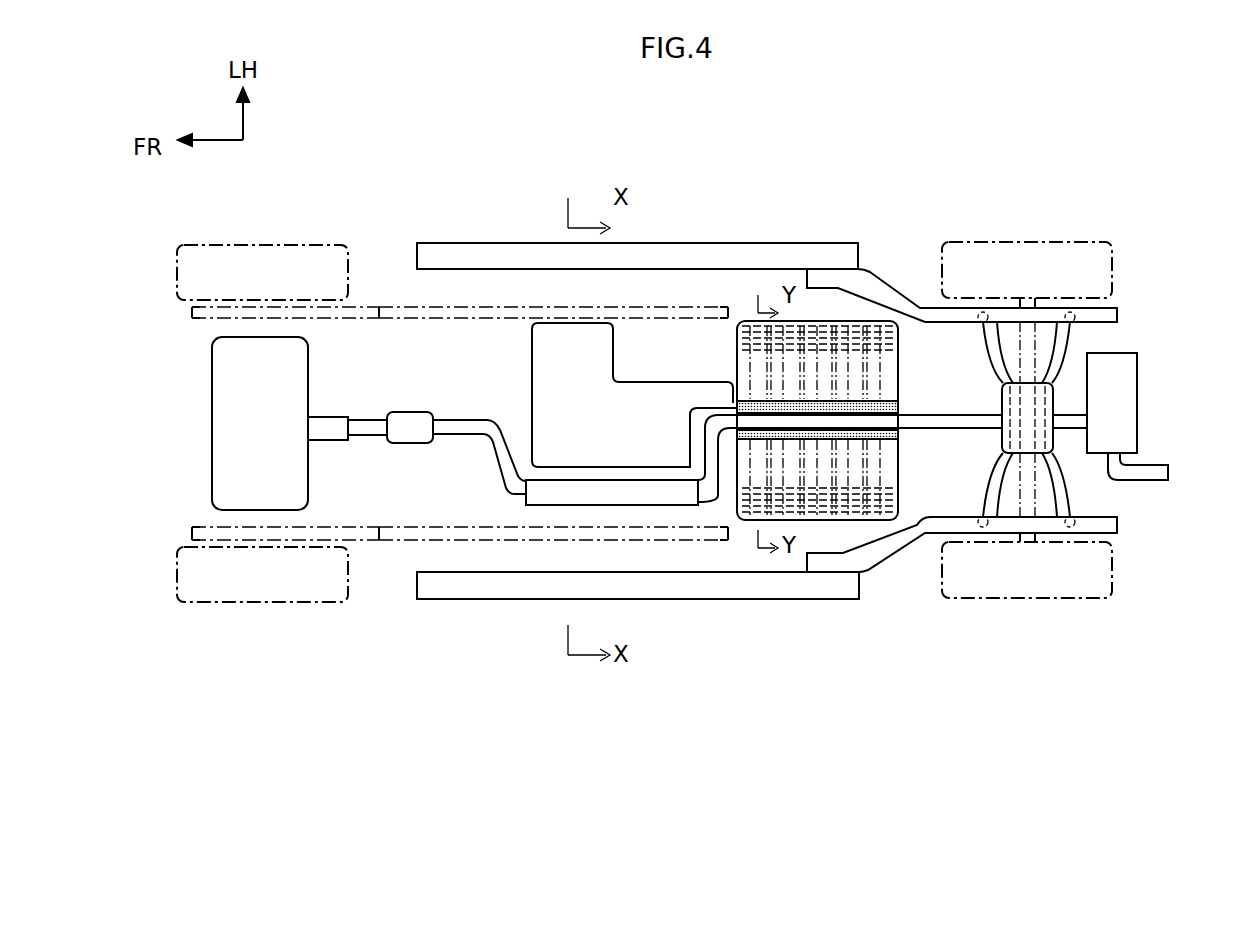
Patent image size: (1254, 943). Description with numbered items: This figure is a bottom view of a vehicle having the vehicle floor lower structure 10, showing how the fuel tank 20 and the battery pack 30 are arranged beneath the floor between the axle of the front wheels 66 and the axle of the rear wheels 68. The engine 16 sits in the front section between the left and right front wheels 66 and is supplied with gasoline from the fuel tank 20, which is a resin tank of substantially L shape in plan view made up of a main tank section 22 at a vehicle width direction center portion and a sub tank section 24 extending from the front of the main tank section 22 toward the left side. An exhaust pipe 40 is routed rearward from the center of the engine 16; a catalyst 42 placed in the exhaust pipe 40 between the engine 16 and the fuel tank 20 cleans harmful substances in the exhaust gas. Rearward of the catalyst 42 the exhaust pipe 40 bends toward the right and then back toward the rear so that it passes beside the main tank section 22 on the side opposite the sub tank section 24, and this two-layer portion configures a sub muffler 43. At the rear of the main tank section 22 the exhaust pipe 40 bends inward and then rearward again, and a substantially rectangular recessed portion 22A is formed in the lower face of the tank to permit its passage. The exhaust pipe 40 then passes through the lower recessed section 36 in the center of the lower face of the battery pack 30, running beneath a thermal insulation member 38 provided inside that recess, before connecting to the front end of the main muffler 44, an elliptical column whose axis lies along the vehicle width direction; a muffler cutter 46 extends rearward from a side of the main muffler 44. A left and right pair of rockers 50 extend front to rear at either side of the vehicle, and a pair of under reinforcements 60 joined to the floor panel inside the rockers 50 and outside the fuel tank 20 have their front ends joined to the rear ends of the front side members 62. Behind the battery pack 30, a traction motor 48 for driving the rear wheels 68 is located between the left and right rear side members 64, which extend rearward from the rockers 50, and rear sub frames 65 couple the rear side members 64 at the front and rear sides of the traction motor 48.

The vehicle floor lower structure 10 is at (735, 288).
The engine 16 is at (215, 425).
The fuel tank 20 is at (527, 388).
The main tank section 22 is at (660, 393).
The recessed portion 22A is at (727, 460).
The sub tank section 24 is at (588, 345).
The battery pack 30 is at (900, 387).
The lower recessed section 36 is at (833, 410).
The thermal insulation member 38 is at (898, 435).
The exhaust pipe 40 is at (497, 468).
The catalyst 42 is at (405, 418).
The sub muffler 43 is at (548, 507).
The main muffler 44 is at (1118, 408).
The muffler cutter 46 is at (1168, 472).
The traction motor 48 is at (1073, 350).
The rockers 50 is at (725, 243).
The under reinforcements 60 is at (455, 305).
The front side members 62 is at (190, 312).
The rear side members 64 is at (1117, 315).
The rear sub frames 65 is at (1003, 488).
The front wheels 66 is at (235, 245).
The rear wheels 68 is at (1000, 241).